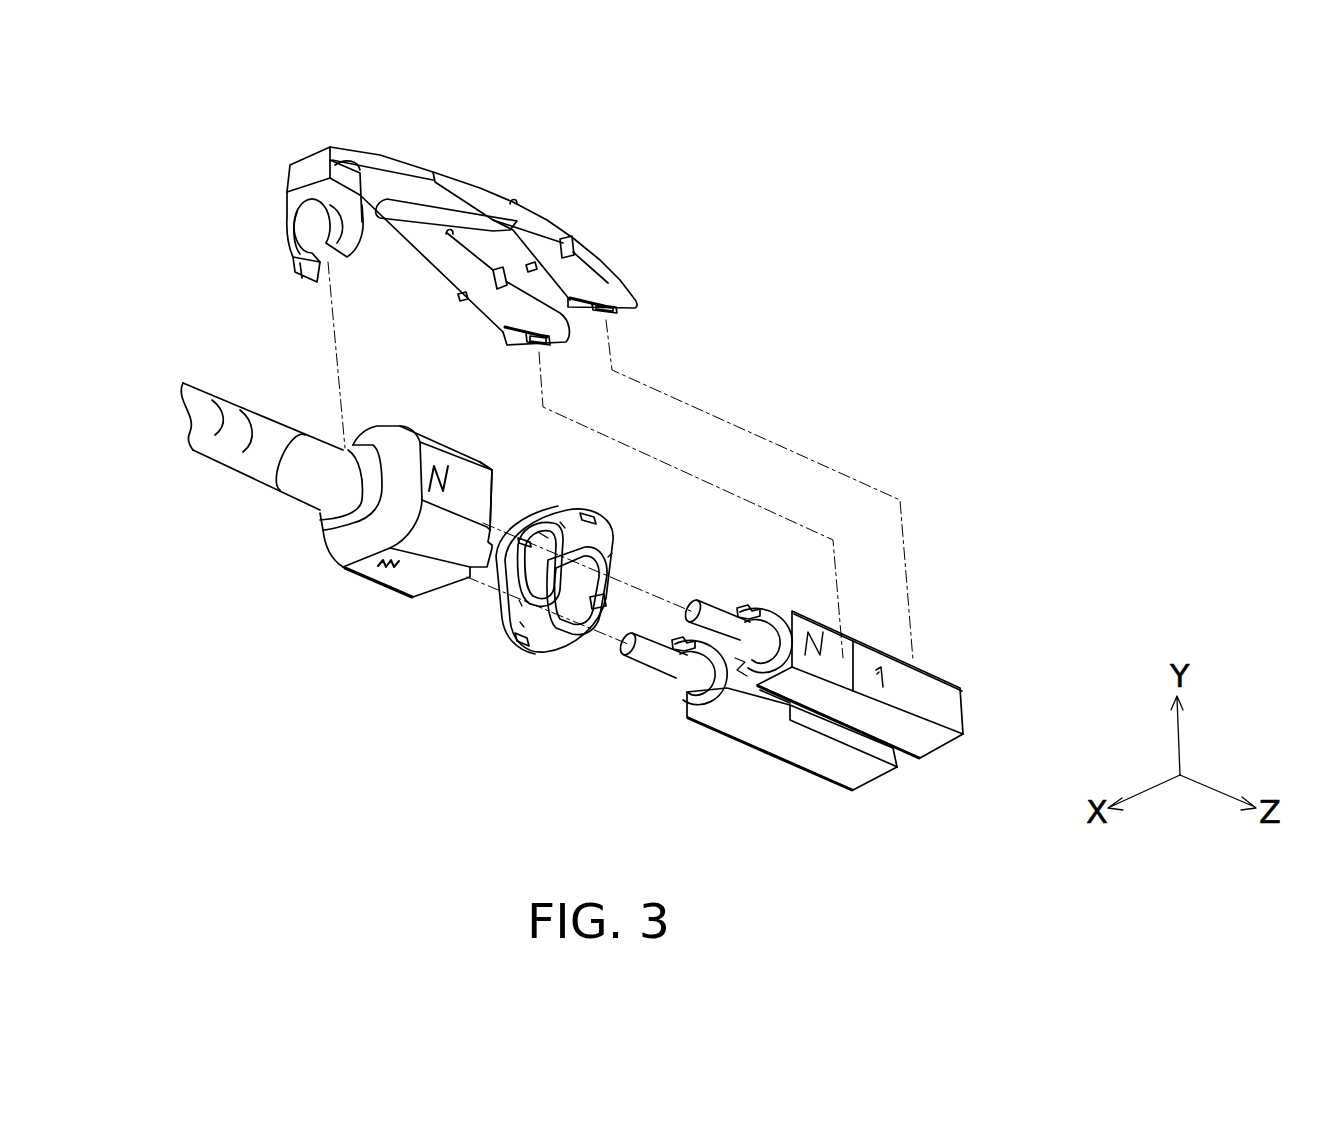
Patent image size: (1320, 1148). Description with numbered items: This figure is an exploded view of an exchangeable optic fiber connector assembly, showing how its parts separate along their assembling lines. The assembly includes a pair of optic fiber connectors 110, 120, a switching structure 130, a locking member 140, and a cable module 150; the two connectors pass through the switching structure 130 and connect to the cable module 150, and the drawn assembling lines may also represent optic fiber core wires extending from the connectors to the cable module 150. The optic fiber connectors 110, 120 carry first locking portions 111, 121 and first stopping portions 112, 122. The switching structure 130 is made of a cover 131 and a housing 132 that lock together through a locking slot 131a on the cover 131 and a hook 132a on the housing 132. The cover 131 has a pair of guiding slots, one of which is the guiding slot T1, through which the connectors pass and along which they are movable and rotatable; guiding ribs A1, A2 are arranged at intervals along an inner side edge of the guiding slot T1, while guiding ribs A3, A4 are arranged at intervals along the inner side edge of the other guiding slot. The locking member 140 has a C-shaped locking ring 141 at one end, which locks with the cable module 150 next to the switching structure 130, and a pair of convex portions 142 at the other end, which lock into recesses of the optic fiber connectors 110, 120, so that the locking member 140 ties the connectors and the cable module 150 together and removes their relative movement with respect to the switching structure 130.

The optic fiber connector 110 is at (703, 691).
The first locking portion 111 is at (685, 695).
The first stopping portion 112 is at (697, 640).
The optic fiber connector 120 is at (997, 641).
The first locking portion 121 is at (744, 608).
The first stopping portion 122 is at (748, 657).
The switching structure 130 is at (1206, 70).
The cover 131 is at (541, 713).
The locking slot 131a is at (525, 656).
The housing 132 is at (336, 619).
The hook 132a is at (497, 468).
The locking member 140 is at (407, 207).
The C-shaped locking ring 141 is at (284, 246).
The convex portion 142 is at (536, 346).
The cable module 150 is at (277, 488).
The guiding rib A1 is at (515, 605).
The guiding rib A2 is at (560, 522).
The guiding rib A3 is at (508, 623).
The guiding rib A4 is at (612, 553).
The guiding slot T1 is at (546, 522).